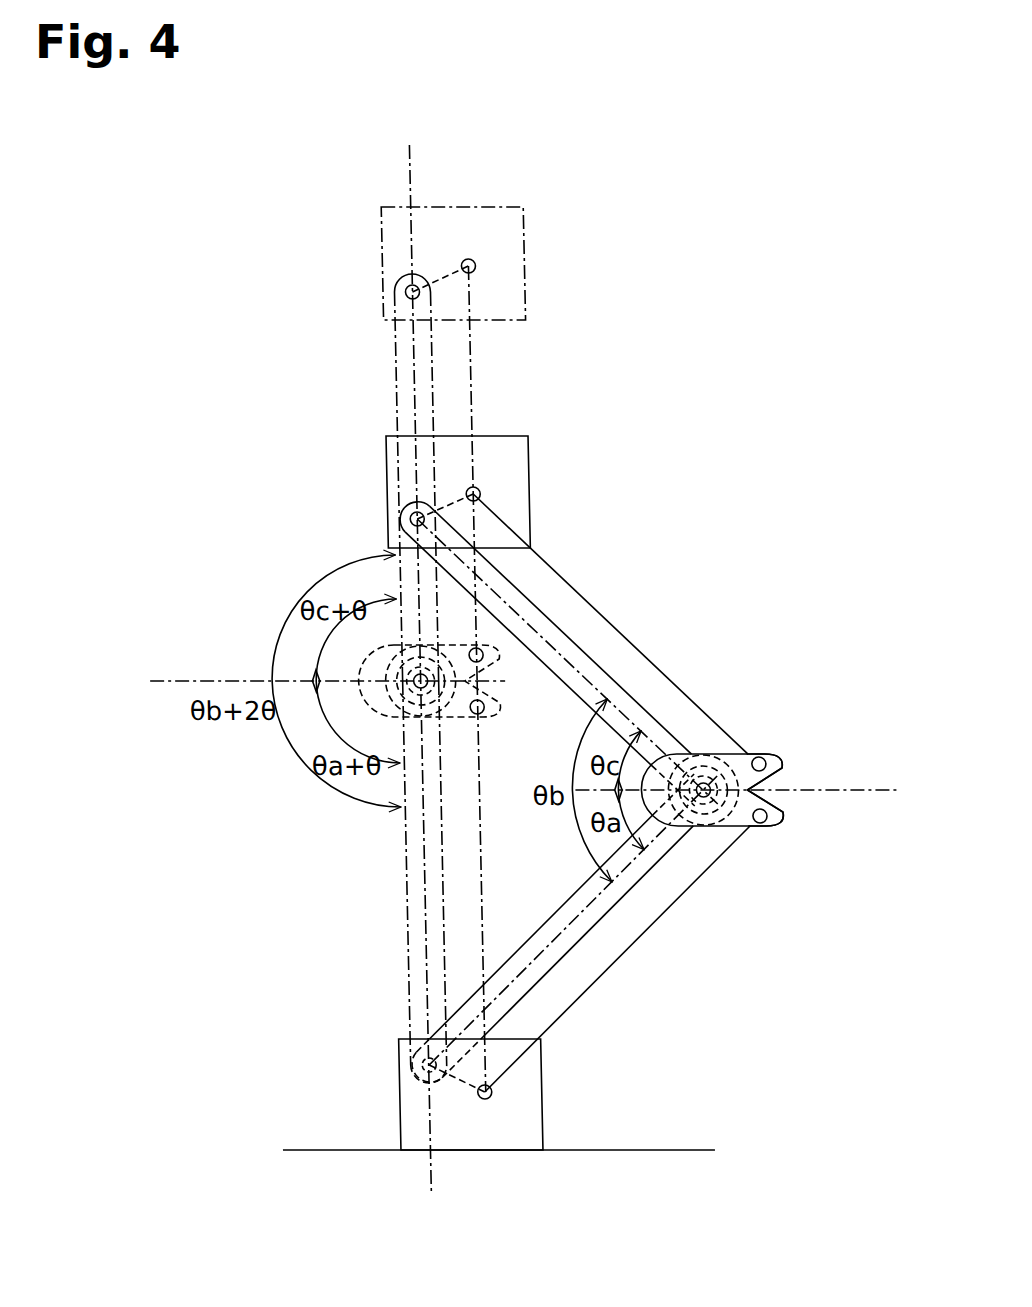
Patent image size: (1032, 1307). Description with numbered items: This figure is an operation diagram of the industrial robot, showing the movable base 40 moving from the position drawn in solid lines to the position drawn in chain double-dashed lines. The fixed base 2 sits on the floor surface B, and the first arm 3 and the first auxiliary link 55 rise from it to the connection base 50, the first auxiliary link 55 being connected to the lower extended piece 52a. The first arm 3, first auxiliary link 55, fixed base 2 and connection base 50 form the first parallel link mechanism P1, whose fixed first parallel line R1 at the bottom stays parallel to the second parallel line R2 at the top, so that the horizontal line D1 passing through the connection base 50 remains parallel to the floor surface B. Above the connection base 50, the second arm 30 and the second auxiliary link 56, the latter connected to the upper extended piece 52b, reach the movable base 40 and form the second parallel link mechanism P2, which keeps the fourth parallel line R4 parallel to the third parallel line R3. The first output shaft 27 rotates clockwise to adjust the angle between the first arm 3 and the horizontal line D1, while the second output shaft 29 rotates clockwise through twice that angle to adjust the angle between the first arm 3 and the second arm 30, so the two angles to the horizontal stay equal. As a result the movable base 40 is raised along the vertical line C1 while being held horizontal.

The vertical line C1 is at (412, 163).
The movable base 40 is at (525, 232).
The fourth parallel line R4 is at (441, 268).
The second arm 30 is at (393, 394).
The second auxiliary link 56 is at (470, 390).
The first arm 3 is at (394, 876).
The first auxiliary link 55 is at (469, 860).
The connection base 50 is at (489, 720).
The second output shaft 29 is at (390, 656).
The first output shaft 27 is at (391, 708).
The third parallel line R3 is at (464, 651).
The second parallel line R2 is at (468, 714).
The upper extended piece 52b is at (771, 763).
The lower extended piece 52a is at (760, 828).
The horizontal line D1 is at (160, 680).
The fixed base 2 is at (383, 1075).
The first parallel line R1 is at (442, 1095).
The floor surface B is at (638, 1150).
The second parallel link mechanism P2 is at (655, 640).
The first parallel link mechanism P1 is at (646, 965).